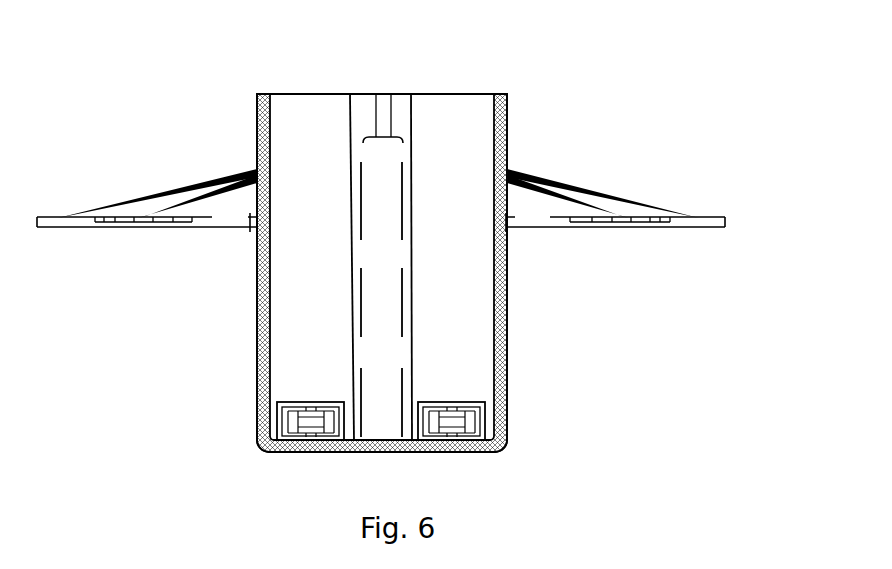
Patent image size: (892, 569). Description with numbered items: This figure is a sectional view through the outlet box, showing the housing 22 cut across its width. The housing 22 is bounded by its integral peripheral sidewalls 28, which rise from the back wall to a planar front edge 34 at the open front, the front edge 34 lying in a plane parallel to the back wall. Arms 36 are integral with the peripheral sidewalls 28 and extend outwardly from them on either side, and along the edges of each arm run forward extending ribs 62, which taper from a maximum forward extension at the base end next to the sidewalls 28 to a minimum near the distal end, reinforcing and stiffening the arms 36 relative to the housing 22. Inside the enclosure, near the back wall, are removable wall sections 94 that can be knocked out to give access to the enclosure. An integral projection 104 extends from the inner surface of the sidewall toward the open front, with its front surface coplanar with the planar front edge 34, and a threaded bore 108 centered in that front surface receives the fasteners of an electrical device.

The housing 22 is at (560, 300).
The peripheral sidewalls 28 is at (508, 152).
The planar front edge 34 is at (467, 93).
The arms 36 is at (695, 227).
The forward extending ribs 62 is at (628, 207).
The removable wall sections 94 is at (306, 422).
The integral projections 104 is at (398, 270).
The threaded bores 108 is at (381, 100).